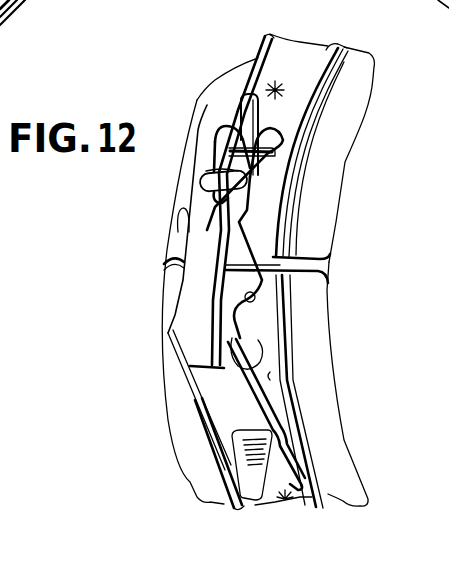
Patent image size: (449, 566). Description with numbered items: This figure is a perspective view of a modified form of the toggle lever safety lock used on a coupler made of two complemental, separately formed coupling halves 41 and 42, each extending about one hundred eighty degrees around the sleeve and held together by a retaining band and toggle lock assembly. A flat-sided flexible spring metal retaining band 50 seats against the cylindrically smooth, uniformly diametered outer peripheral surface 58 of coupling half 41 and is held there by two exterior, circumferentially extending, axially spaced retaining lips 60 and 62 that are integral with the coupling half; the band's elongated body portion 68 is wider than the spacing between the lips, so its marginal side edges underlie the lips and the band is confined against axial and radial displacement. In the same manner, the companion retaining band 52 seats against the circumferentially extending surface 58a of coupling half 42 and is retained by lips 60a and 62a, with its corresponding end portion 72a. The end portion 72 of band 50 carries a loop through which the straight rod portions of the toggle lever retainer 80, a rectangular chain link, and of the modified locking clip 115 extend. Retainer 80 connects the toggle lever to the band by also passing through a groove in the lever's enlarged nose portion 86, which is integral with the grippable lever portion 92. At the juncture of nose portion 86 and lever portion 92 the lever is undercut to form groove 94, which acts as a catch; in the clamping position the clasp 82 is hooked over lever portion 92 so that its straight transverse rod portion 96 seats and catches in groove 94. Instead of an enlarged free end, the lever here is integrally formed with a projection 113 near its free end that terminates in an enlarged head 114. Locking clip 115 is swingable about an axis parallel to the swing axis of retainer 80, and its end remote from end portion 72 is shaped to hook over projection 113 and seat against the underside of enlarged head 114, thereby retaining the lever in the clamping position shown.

The coupling half 41 is at (352, 107).
The coupling half 42 is at (320, 323).
The retaining band 50 is at (303, 57).
The retaining band 52 is at (286, 503).
The outer peripheral surface 58 is at (273, 193).
The circumferentially extending surface 58a is at (288, 398).
The retaining lip 60 is at (268, 36).
The retaining lip 60a is at (220, 465).
The retaining lip 62 is at (340, 44).
The retaining lip 62a is at (270, 392).
The body portion 68 is at (287, 70).
The end portion 72 is at (278, 124).
The end portion 72a is at (275, 452).
The toggle lever retainer 80 is at (178, 212).
The clasp 82 is at (168, 333).
The nose portion 86 is at (268, 347).
The lever portion 92 is at (177, 248).
The groove 94 is at (238, 297).
The rod portion 96 is at (248, 300).
The projection 113 is at (197, 178).
The enlarged head 114 is at (222, 171).
The locking clip 115 is at (214, 132).